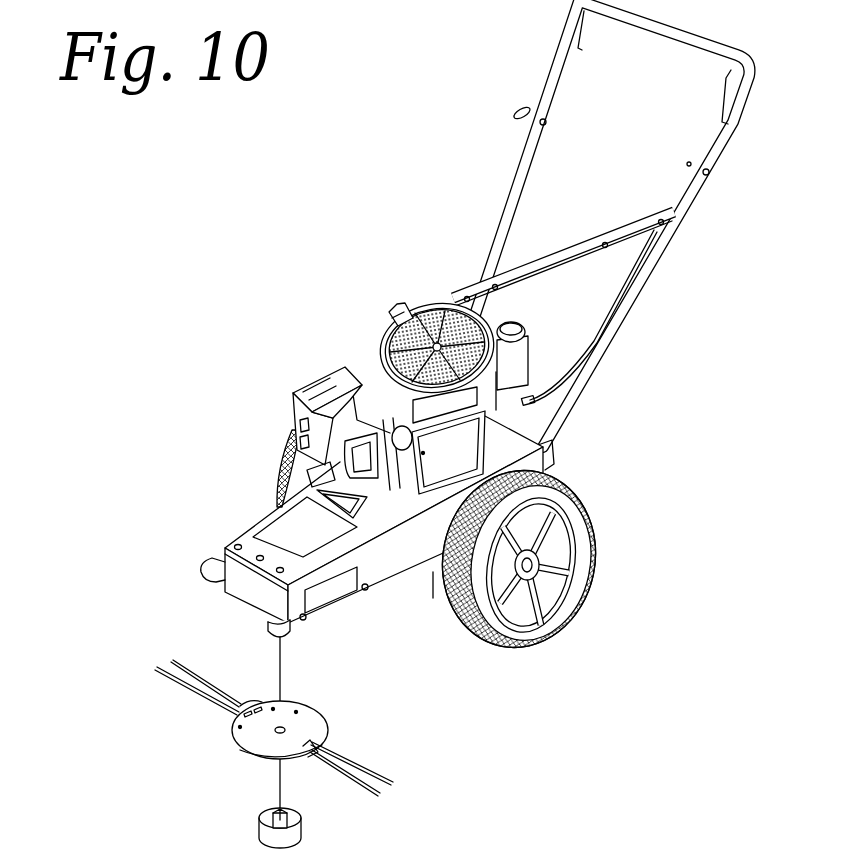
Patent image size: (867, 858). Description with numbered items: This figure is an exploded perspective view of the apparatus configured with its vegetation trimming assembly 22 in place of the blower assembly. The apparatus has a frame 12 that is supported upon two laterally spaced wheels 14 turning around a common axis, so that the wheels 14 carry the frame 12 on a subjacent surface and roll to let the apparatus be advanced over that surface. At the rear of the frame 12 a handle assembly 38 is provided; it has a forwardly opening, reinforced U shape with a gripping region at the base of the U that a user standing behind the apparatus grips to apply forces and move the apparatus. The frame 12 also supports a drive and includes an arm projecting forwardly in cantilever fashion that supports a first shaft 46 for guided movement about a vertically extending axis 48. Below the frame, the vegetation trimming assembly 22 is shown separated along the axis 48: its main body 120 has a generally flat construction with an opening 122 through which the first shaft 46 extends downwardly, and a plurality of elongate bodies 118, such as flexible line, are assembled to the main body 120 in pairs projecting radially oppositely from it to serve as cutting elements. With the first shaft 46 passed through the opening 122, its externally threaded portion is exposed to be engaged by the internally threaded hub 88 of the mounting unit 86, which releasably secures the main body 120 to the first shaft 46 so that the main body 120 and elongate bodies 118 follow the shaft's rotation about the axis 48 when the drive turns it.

The frame 12 is at (395, 569).
The wheel 14 is at (280, 467).
The vegetation trimming assembly 22 is at (264, 755).
The handle assembly 38 is at (696, 188).
The first shaft 46 is at (277, 637).
The vertically extending axis 48 is at (283, 672).
The mounting unit 86 is at (270, 816).
The hub 88 is at (258, 823).
The elongate body 118 is at (390, 777).
The main body 120 is at (311, 701).
The opening 122 is at (279, 750).